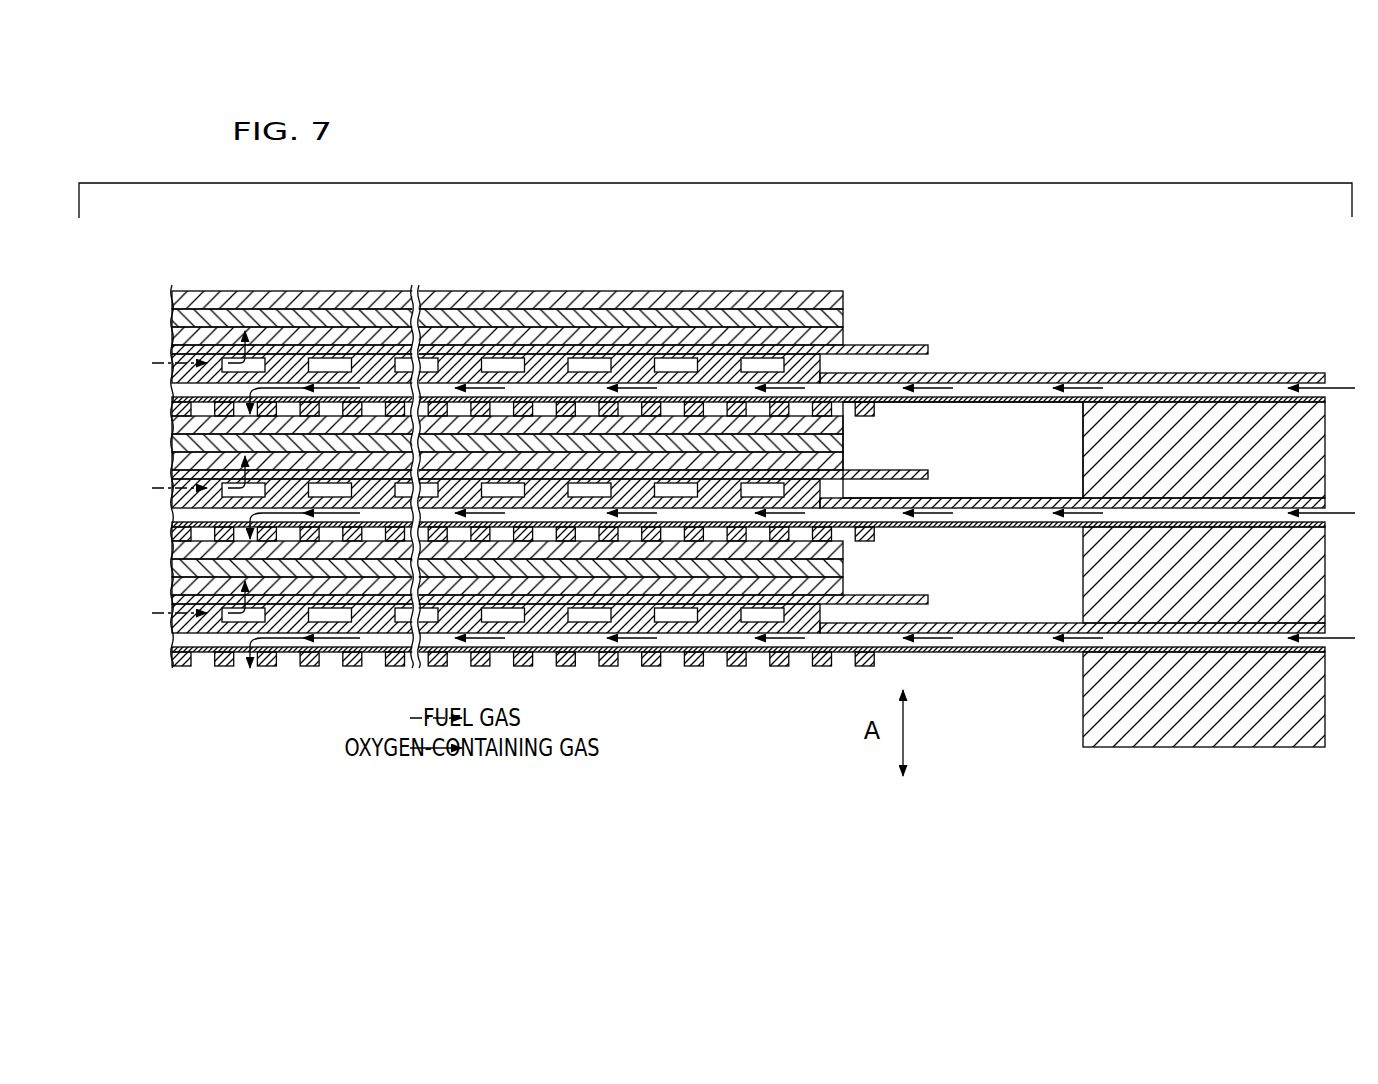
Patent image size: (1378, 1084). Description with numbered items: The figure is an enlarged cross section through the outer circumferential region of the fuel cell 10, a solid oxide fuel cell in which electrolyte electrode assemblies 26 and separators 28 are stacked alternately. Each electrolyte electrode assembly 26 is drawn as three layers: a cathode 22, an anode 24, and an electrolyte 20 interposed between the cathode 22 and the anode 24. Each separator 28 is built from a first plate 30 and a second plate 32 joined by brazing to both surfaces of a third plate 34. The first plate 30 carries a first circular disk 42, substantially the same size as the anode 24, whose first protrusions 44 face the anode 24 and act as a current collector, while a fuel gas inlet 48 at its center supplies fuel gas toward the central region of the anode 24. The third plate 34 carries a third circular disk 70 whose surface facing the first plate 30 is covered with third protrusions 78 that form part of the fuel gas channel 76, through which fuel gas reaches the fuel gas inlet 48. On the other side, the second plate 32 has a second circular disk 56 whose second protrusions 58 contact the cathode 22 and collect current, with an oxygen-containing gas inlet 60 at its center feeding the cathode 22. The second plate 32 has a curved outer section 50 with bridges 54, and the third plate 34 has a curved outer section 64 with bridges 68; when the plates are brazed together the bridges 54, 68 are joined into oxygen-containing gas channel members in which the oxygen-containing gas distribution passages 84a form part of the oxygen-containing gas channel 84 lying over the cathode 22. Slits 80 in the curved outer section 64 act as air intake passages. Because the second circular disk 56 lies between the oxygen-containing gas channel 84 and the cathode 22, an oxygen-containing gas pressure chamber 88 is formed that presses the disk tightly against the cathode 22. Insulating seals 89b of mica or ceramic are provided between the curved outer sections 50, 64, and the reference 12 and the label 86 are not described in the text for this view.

The fuel cell 10 is at (167, 502).
The casing 12 is at (1055, 259).
The electrolyte 20 is at (180, 448).
The cathode 22 is at (180, 428).
The anode 24 is at (180, 466).
The electrolyte electrode assembly 26 is at (125, 418).
The separator 28 is at (848, 236).
The first plate 30 is at (912, 344).
The second plate 32 is at (838, 394).
The third plate 34 is at (882, 371).
The first circular disk 42 is at (761, 346).
The first protrusion 44 is at (316, 346).
The fuel gas inlet 48 is at (244, 348).
The curved outer section 50 is at (1197, 397).
The bridge 54 is at (993, 403).
The second circular disk 56 is at (791, 346).
The second protrusion 58 is at (540, 350).
The oxygen-containing gas inlet 60 is at (190, 404).
The curved outer section 64 is at (1256, 373).
The bridge 68 is at (984, 374).
The third circular disk 70 is at (375, 346).
The fuel gas channel 76 is at (586, 340).
The third protrusion 78 is at (458, 350).
The slit 80 is at (1307, 387).
The oxygen-containing gas channel 84 is at (728, 346).
The oxygen-containing gas distribution passage 84a is at (1034, 386).
The fuel gas flow 86 is at (666, 346).
The oxygen-containing gas pressure chamber 88 is at (621, 346).
The insulating seal 89b is at (1310, 447).